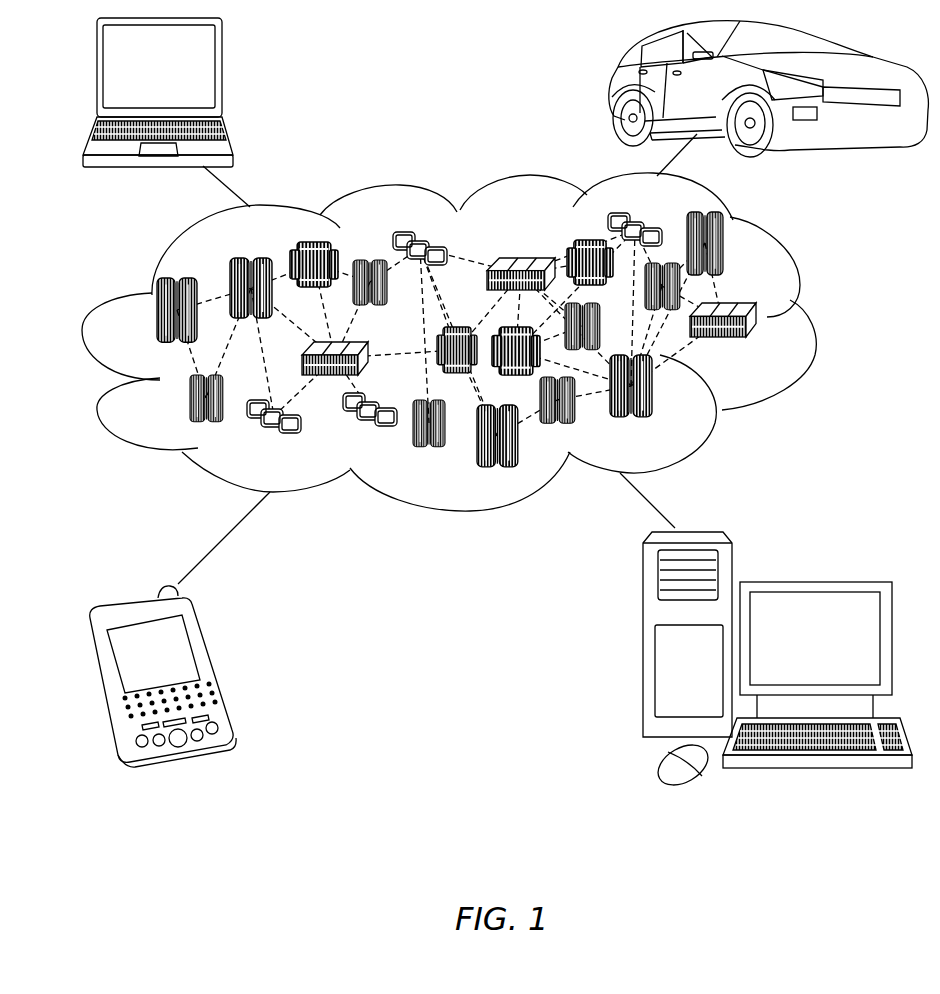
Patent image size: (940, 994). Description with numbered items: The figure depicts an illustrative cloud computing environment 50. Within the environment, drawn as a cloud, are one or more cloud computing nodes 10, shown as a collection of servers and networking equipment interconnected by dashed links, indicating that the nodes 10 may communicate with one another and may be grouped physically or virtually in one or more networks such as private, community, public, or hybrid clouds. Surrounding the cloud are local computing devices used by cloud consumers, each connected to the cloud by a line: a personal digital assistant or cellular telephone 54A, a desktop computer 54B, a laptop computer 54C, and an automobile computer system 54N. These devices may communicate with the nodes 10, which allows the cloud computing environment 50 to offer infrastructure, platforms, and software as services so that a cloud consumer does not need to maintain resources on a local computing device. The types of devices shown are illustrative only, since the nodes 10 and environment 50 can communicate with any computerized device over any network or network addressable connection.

The cloud computing nodes 10 is at (768, 350).
The cloud computing environment 50 is at (812, 320).
The personal digital assistant or cellular telephone 54A is at (212, 668).
The desktop computer 54B is at (812, 582).
The laptop computer 54C is at (222, 73).
The automobile computer system 54N is at (614, 88).